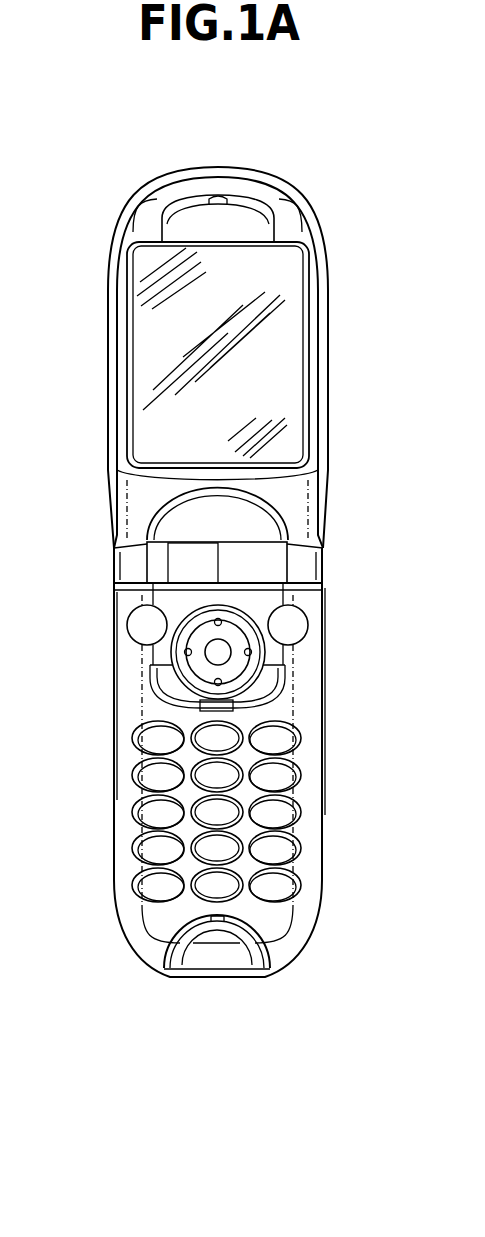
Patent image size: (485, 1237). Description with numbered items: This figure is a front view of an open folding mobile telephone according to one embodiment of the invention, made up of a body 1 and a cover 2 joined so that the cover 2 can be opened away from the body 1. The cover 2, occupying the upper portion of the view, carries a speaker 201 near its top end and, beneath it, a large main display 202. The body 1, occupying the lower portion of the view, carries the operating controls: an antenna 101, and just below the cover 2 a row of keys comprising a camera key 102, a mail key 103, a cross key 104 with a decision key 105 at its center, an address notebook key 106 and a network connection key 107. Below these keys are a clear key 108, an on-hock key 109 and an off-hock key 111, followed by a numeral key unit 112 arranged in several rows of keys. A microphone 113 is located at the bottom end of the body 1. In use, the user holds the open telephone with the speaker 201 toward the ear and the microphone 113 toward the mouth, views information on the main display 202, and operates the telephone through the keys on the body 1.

The body 1 is at (287, 948).
The cover 2 is at (290, 218).
The antenna 101 is at (326, 534).
The camera key 102 is at (152, 626).
The mail key 103 is at (162, 679).
The cross key 104 is at (217, 619).
The decision key 105 is at (219, 645).
The address notebook key 106 is at (284, 630).
The network connection key 107 is at (270, 680).
The clear key 108 is at (215, 745).
The on-hock key 109 is at (158, 736).
The off-hock key 111 is at (283, 742).
The numeral key unit 112 is at (336, 778).
The microphone 113 is at (217, 918).
The speaker 201 is at (219, 196).
The main display 202 is at (268, 342).